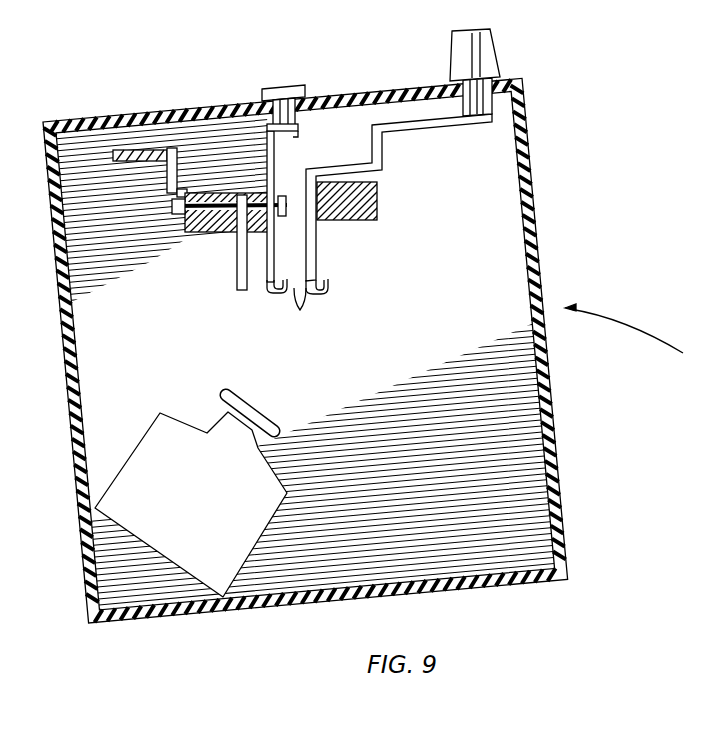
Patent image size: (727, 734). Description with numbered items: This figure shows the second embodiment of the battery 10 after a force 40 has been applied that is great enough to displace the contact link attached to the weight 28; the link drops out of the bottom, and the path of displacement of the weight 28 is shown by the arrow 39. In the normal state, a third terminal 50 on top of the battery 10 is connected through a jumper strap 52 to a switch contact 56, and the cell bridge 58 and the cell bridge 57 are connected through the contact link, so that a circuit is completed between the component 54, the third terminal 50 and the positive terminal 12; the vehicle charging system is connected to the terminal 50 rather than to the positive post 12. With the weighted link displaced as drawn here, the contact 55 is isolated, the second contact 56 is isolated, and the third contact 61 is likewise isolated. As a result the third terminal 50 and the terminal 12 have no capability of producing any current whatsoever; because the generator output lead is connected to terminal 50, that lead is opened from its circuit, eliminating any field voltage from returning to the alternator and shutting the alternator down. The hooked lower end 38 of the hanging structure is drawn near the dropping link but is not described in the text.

The battery 10 is at (100, 102).
The positive terminal 12 is at (497, 54).
The weight 28 is at (172, 411).
The hook end 38 is at (308, 294).
The arrow 39 is at (305, 300).
The force 40 is at (637, 328).
The third terminal 50 is at (287, 88).
The jumper strap 52 is at (303, 128).
The component 54 is at (112, 154).
The contact 55 is at (257, 288).
The switch contact 56 is at (267, 276).
The cell bridge 57 is at (376, 216).
The cell bridge 58 is at (268, 190).
The third contact 61 is at (335, 276).